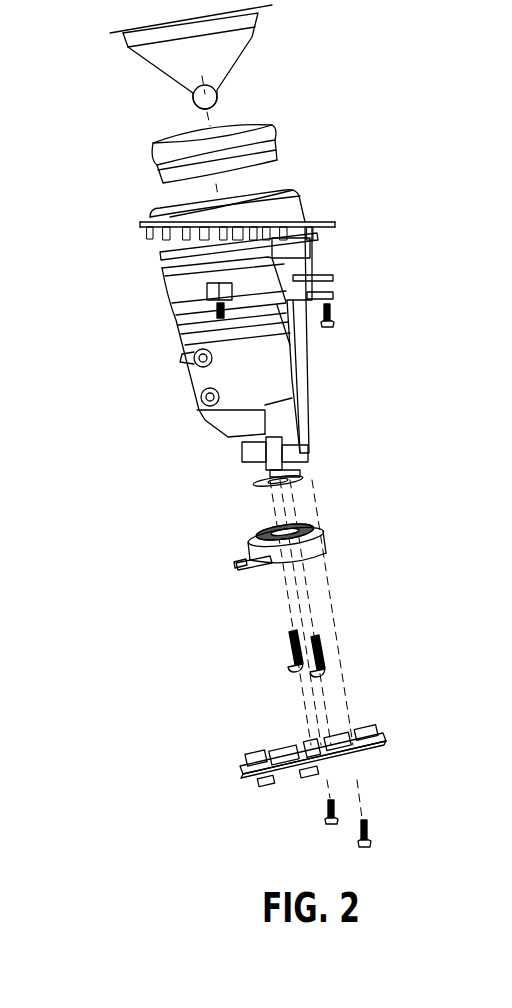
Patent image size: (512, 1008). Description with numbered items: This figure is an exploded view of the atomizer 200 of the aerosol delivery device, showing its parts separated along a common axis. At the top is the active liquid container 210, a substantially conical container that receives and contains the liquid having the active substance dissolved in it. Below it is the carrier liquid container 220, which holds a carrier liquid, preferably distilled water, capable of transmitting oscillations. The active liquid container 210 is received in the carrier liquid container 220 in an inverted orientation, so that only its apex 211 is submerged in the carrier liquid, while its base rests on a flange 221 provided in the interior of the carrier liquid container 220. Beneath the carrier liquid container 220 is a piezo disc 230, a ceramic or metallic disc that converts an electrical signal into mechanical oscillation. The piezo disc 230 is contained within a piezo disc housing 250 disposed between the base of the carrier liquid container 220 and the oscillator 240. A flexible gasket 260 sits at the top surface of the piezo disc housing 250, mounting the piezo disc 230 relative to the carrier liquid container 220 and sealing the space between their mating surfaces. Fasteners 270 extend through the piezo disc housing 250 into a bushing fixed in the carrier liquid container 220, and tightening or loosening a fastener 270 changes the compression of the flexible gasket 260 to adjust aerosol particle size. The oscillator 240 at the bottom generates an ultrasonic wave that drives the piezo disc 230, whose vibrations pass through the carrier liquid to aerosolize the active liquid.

The atomizer 200 is at (400, 220).
The active liquid container 210 is at (252, 37).
The apex 211 is at (193, 103).
The carrier liquid container 220 is at (303, 348).
The flange 221 is at (296, 187).
The piezo disc 230 is at (305, 481).
The oscillator 240 is at (316, 781).
The piezo disc housing 250 is at (328, 549).
The flexible gasket 260 is at (316, 527).
The fastener 270 is at (288, 676).